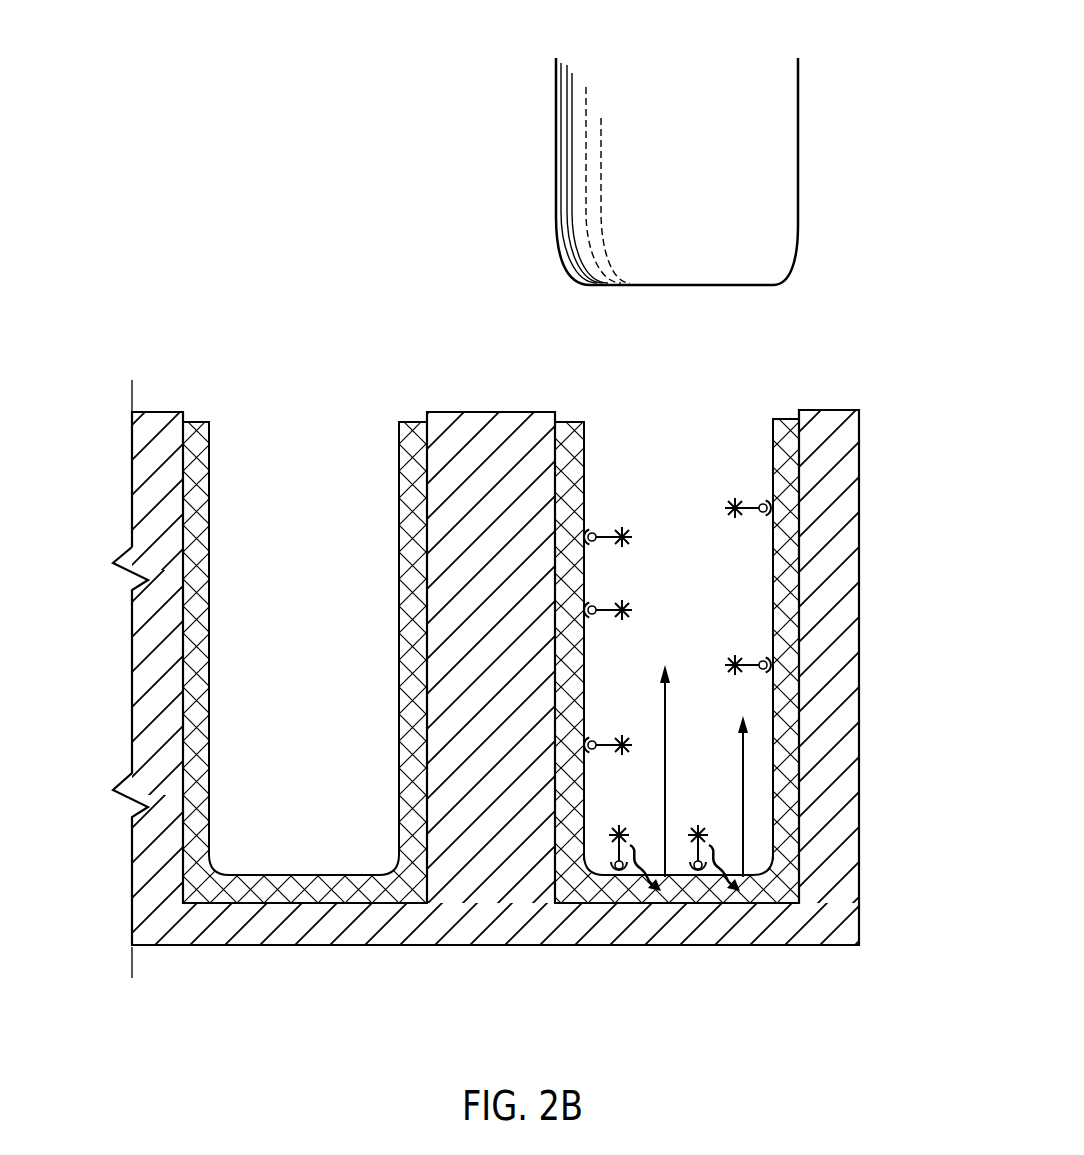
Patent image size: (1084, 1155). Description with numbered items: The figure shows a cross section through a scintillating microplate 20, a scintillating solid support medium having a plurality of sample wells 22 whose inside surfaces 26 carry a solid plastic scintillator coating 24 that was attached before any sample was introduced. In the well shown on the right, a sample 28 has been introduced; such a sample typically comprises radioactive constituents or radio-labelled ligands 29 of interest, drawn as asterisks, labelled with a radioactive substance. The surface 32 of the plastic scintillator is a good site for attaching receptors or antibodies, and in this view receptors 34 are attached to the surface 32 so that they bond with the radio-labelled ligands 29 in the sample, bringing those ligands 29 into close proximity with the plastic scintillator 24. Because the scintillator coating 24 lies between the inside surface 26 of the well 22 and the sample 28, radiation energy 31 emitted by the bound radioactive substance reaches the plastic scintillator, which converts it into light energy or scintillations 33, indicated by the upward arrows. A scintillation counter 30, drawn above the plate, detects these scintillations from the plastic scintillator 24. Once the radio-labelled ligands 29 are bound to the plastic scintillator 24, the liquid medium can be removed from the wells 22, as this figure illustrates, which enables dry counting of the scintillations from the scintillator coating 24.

The scintillating microplate 20 is at (170, 220).
The sample well 22 is at (746, 384).
The solid plastic scintillator coating 24 is at (787, 570).
The inside surface of the sample well 26 is at (555, 467).
The sample 28 is at (730, 635).
The radio-labelled ligand 29 is at (740, 495).
The scintillation counter 30 is at (556, 138).
The radiation energy 31 is at (727, 865).
The surface of the plastic scintillator 32 is at (584, 505).
The scintillations 33 is at (743, 812).
The receptor 34 is at (765, 652).